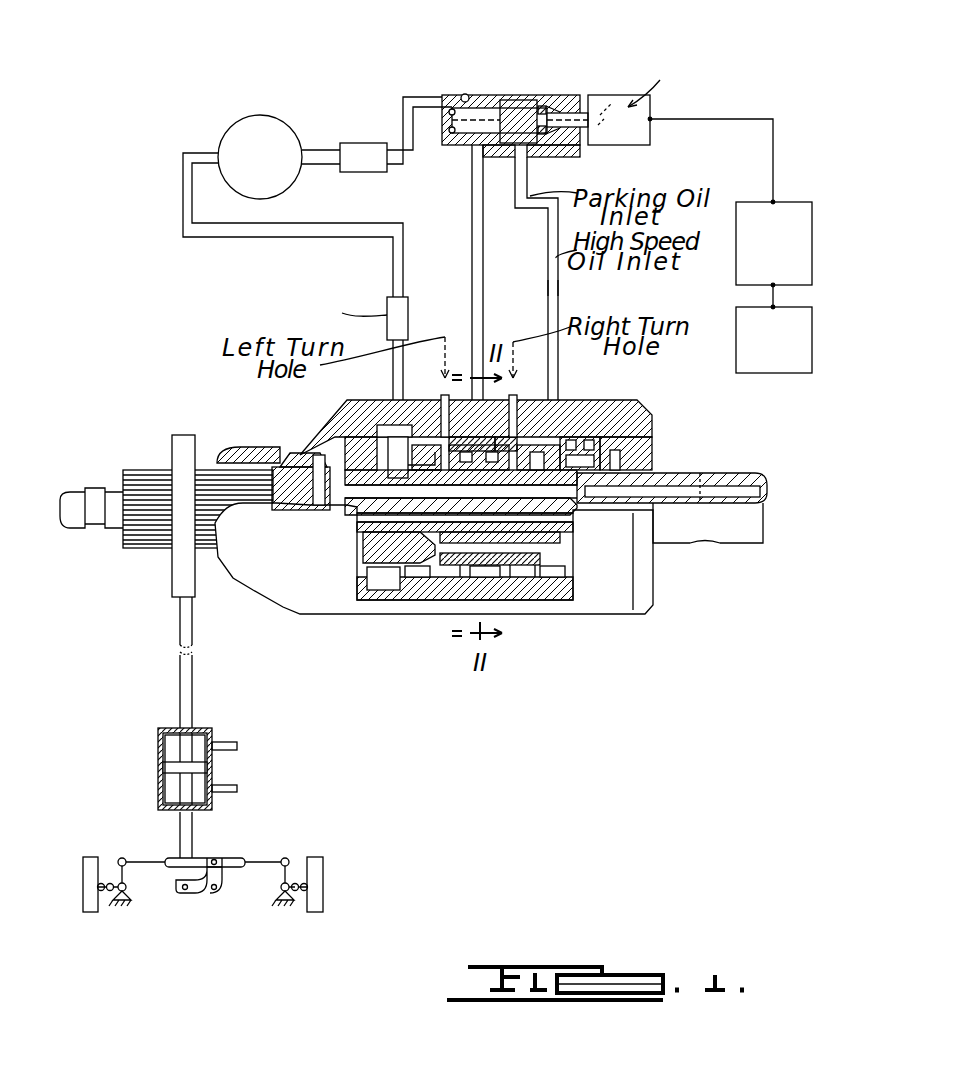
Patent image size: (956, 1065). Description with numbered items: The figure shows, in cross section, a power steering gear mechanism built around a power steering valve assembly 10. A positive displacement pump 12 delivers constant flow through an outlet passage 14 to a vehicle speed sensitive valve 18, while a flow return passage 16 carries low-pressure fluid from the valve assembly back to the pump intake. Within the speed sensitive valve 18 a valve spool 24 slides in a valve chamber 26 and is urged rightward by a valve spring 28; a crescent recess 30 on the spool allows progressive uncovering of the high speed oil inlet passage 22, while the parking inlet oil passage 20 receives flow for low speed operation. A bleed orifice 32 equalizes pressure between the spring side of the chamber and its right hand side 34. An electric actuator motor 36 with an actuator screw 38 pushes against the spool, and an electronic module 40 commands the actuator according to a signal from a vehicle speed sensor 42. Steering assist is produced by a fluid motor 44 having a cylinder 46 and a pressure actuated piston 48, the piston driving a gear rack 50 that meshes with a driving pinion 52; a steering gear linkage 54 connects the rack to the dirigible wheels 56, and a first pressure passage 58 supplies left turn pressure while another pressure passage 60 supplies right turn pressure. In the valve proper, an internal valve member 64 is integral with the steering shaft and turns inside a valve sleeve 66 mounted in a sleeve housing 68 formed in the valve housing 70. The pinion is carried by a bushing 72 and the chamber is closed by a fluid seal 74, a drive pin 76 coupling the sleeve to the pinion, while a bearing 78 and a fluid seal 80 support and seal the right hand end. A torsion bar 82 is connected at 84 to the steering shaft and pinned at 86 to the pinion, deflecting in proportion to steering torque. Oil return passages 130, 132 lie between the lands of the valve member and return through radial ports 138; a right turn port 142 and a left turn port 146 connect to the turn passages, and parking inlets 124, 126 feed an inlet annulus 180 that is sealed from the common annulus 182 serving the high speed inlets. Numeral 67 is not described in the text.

The power steering valve assembly 10 is at (503, 577).
The positive displacement pump 12 is at (241, 117).
The outlet passage 14 is at (315, 150).
The flow return passage 16 is at (183, 190).
The vehicle speed sensitive valve 18 is at (516, 84).
The parking inlet oil passage 20 is at (472, 166).
The high speed oil inlet passage 22 is at (559, 288).
The valve spool 24 is at (520, 97).
The valve chamber 26 is at (465, 94).
The valve spring 28 is at (449, 100).
The crescent recess 30 is at (503, 100).
The bleed orifice 32 is at (550, 105).
The right hand side of the valve chamber 34 is at (577, 112).
The electric actuator motor 36 is at (643, 140).
The actuator screw 38 is at (477, 198).
The electronic module 40 is at (790, 202).
The vehicle speed sensor 42 is at (736, 317).
The fluid motor 44 is at (186, 741).
The cylinder 46 is at (207, 768).
The pressure actuated piston 48 is at (170, 767).
The gear rack 50 is at (180, 577).
The driving pinion 52 is at (136, 470).
The steering gear linkage 54 is at (238, 858).
The dirigible wheels 56 is at (323, 901).
The first pressure passage 58 is at (443, 398).
The pressure passage 60 is at (515, 396).
The internal valve member 64 is at (500, 520).
The valve sleeve 66 is at (445, 595).
The output shaft bore 67 is at (708, 492).
The sleeve housing 68 is at (622, 437).
The valve housing 70 is at (355, 415).
The bushing 72 is at (262, 455).
The fluid seal 74 is at (302, 460).
The drive pin 76 is at (395, 430).
The bearing 78 is at (605, 460).
The fluid seal 80 is at (632, 450).
The torsion bar 82 is at (680, 535).
The torsion bar connection 84 is at (740, 478).
The pin connection 86 is at (318, 510).
The parking inlet 124 is at (465, 445).
The parking inlet 126 is at (490, 572).
The oil return passage 130 is at (500, 480).
The oil return passage 132 is at (520, 547).
The radial ports 138 is at (372, 540).
The right turn port 142 is at (510, 445).
The left turn port 146 is at (320, 506).
The inlet annulus 180 is at (490, 590).
The common annulus 182 is at (545, 590).